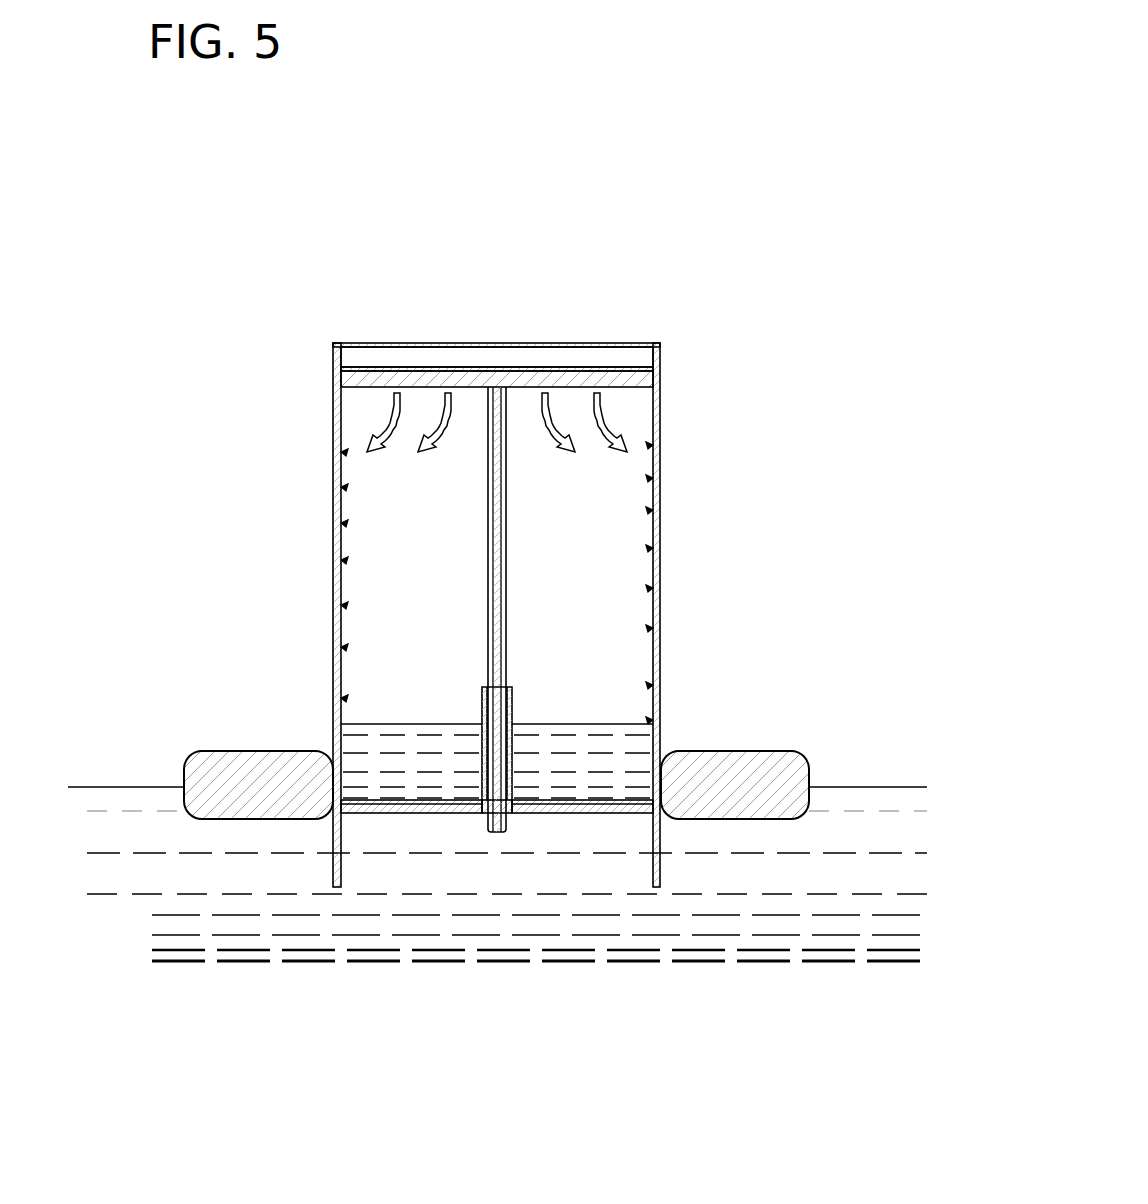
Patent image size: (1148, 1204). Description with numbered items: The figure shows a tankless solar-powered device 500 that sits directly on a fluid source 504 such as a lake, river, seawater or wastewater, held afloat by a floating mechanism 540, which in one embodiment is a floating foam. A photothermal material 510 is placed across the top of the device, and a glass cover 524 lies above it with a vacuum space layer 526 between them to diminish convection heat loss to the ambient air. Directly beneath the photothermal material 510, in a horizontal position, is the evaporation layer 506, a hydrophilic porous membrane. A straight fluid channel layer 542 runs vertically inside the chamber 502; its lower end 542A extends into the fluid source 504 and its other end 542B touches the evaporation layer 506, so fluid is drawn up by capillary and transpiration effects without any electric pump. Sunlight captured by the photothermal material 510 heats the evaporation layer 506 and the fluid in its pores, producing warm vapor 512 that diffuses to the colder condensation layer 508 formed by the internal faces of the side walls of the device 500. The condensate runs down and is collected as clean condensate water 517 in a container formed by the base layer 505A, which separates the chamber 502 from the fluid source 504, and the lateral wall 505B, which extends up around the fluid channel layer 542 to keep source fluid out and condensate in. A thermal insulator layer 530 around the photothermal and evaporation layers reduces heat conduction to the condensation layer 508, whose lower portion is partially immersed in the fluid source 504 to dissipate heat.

The solar-powered device 500 is at (527, 175).
The chamber 502 is at (497, 593).
The fluid source 504 is at (218, 920).
The base layer 505A is at (385, 815).
The lateral wall 505B is at (483, 795).
The evaporation layer 506 is at (618, 372).
The condensation layer 508 is at (323, 583).
The photothermal material 510 is at (377, 363).
The warm vapor 512 is at (387, 438).
The collected condensate water 517 is at (628, 746).
The glass cover 524 is at (412, 340).
The vacuum space layer 526 is at (600, 363).
The thermal insulator layer 530 is at (665, 387).
The floating mechanism 540 is at (248, 742).
The fluid channel layer 542 is at (488, 617).
The end of fluid channel layer 542A is at (486, 833).
The other end of fluid channel layer 542B is at (488, 405).